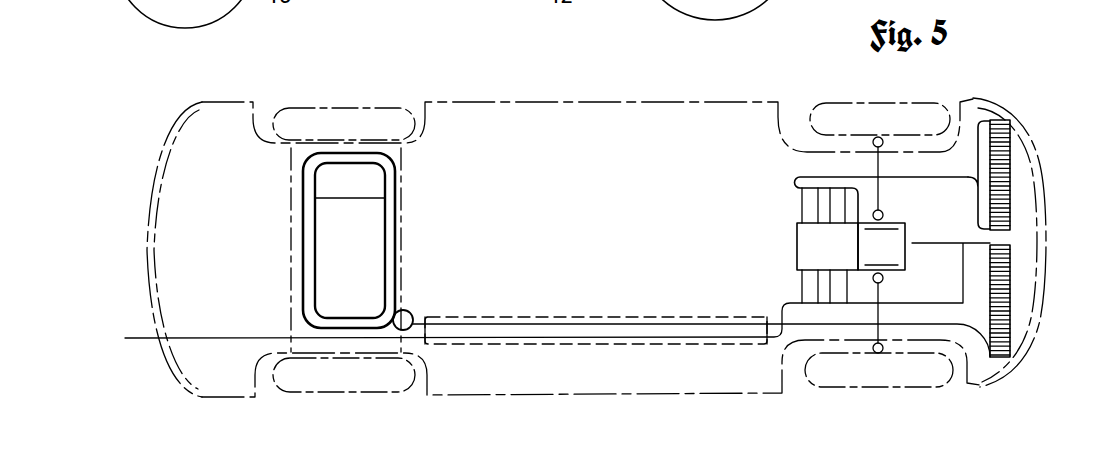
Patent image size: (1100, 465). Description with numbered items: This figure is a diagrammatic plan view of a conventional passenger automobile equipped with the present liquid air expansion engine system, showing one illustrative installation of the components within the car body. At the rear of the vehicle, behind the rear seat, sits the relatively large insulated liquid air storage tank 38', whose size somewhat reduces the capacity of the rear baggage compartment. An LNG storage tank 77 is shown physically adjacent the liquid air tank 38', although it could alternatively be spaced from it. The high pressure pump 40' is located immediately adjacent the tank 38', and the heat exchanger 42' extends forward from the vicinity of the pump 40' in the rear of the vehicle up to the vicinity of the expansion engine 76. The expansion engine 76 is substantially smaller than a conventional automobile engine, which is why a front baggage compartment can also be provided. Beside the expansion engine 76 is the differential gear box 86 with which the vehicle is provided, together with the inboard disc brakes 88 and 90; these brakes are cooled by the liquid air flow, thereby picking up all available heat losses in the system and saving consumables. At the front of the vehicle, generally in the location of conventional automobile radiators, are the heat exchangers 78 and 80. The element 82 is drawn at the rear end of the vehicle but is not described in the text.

The rear bumper 82 is at (177, 162).
The LNG storage tank 77 is at (327, 175).
The insulated storage tank 38' is at (381, 240).
The high pressure pump 40' is at (374, 366).
The heat exchanger 42' is at (596, 308).
The expansion engine 76 is at (796, 235).
The differential gear box 86 is at (900, 232).
The inboard disc brake 90 is at (884, 212).
The inboard disc brake 88 is at (885, 280).
The heat exchanger 80 is at (1010, 142).
The heat exchanger 78 is at (1010, 317).